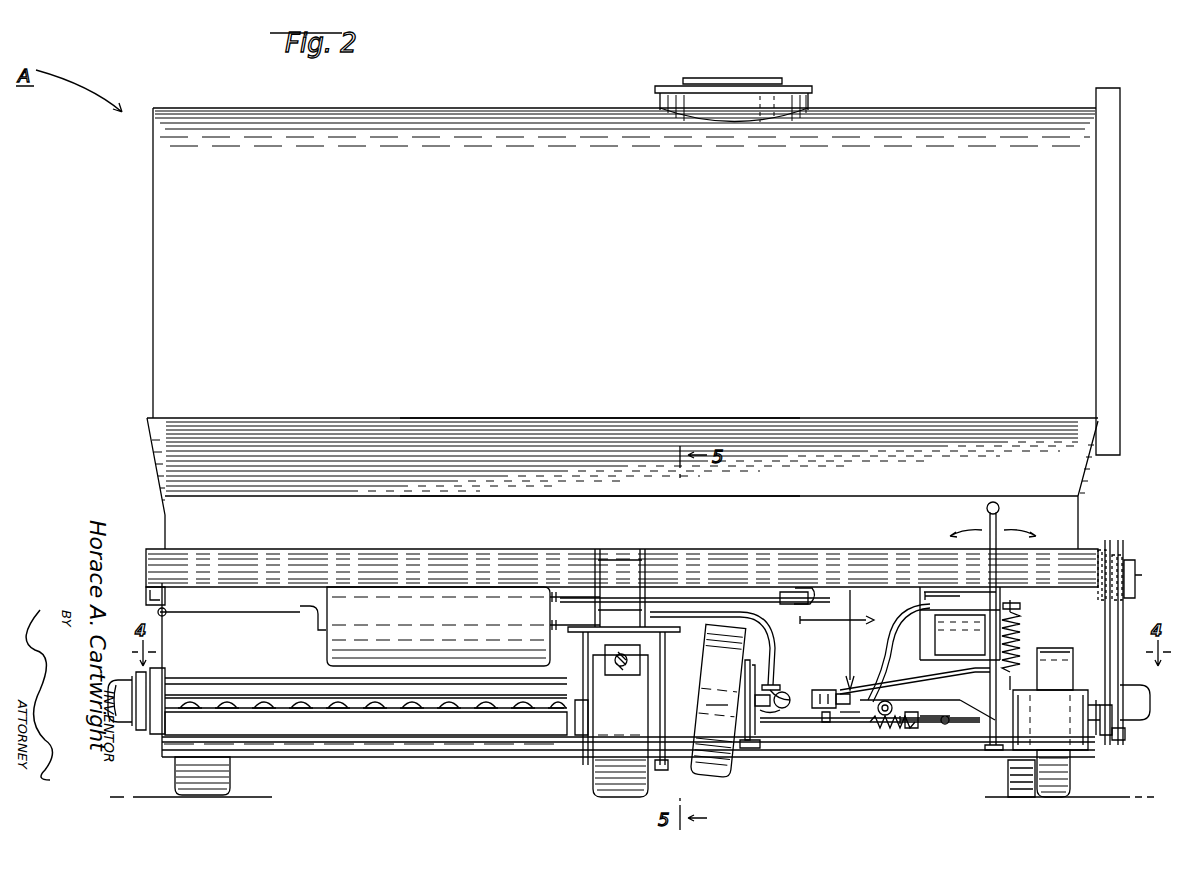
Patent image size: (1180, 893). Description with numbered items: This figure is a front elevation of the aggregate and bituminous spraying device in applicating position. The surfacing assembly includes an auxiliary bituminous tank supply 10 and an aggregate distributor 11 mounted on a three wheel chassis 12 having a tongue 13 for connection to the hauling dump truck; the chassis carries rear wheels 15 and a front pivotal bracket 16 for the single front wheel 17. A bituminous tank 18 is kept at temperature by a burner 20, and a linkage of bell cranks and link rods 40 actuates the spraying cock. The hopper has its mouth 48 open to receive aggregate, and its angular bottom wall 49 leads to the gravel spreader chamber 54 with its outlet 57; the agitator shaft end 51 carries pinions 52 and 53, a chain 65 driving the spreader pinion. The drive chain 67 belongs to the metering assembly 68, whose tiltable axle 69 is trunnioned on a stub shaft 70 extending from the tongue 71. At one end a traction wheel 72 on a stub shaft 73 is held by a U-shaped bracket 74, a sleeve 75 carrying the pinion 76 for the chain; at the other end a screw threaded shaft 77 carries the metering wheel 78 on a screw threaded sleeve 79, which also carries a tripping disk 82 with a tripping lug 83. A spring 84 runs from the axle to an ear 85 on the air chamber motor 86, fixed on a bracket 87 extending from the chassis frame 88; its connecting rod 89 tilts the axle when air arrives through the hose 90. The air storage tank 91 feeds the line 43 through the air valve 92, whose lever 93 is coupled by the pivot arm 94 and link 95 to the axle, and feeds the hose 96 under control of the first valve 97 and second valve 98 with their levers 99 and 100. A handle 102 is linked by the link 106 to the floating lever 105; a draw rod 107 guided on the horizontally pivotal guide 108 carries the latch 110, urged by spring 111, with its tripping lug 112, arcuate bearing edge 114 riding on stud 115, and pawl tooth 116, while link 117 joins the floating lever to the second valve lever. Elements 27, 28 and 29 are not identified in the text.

The auxiliary bituminous tank supply 10 is at (505, 106).
The aggregate distributor 11 is at (405, 408).
The three wheel chassis 12 is at (148, 564).
The tongue 13 is at (621, 668).
The rear wheels 15 is at (185, 776).
The front pivotal bracket 16 is at (578, 718).
The front wheel 17 is at (600, 770).
The bituminous tank 18 is at (935, 172).
The burner 20 is at (1103, 440).
The end fitting 27 is at (130, 665).
The auger tube 28 is at (210, 680).
The trough 29 is at (430, 710).
The bell cranks and link rods 40 is at (1146, 747).
The line 43 is at (826, 598).
The mouth 48 is at (594, 418).
The angular bottom wall 49 is at (524, 512).
The shaft end 51 is at (1138, 576).
The pinion 52 is at (1118, 555).
The pinion 53 is at (1102, 550).
The gravel spreader chamber 54 is at (322, 748).
The outlet 57 is at (275, 740).
The chain 65 is at (1106, 644).
The drive chain 67 is at (1125, 640).
The metering assembly 68 is at (905, 740).
The tiltable axle 69 is at (965, 740).
The stub shaft 70 is at (887, 698).
The tongue 71 is at (942, 587).
The traction wheel 72 is at (1060, 785).
The stub shaft 73 is at (1025, 703).
The U-shaped bracket 74 is at (1058, 742).
The sleeve 75 is at (1097, 736).
The pinion 76 is at (1110, 736).
The screw threaded shaft 77 is at (749, 688).
The metering wheel 78 is at (718, 764).
The screw threaded sleeve 79 is at (736, 702).
The tripping disk 82 is at (746, 675).
The tripping lug 83 is at (749, 748).
The spring 84 is at (1018, 646).
The ear 85 is at (1013, 620).
The air chamber motor 86 is at (960, 598).
The bracket 87 is at (930, 660).
The chassis frame 88 is at (262, 562).
The connecting rod 89 is at (986, 667).
The hose 90 is at (900, 603).
The air storage tank 91 is at (428, 621).
The air valve 92 is at (790, 592).
The lever 93 is at (803, 588).
The pivot arm 94 is at (845, 620).
The link 95 is at (850, 660).
The hose 96 is at (696, 618).
The first valve 97 is at (778, 688).
The second valve 98 is at (818, 690).
The actuating lever 99 is at (790, 692).
The actuating lever 100 is at (842, 692).
The handle 102 is at (988, 512).
The floating lever 105 is at (980, 718).
The link 106 is at (992, 750).
The draw rod 107 is at (945, 728).
The horizontally pivotal guide 108 is at (912, 712).
The latch 110 is at (775, 710).
The spring 111 is at (890, 728).
The tripping lug 112 is at (773, 721).
The arcuate bearing edge 114 is at (870, 724).
The stud 115 is at (826, 724).
The pawl tooth 116 is at (852, 724).
The link 117 is at (920, 682).